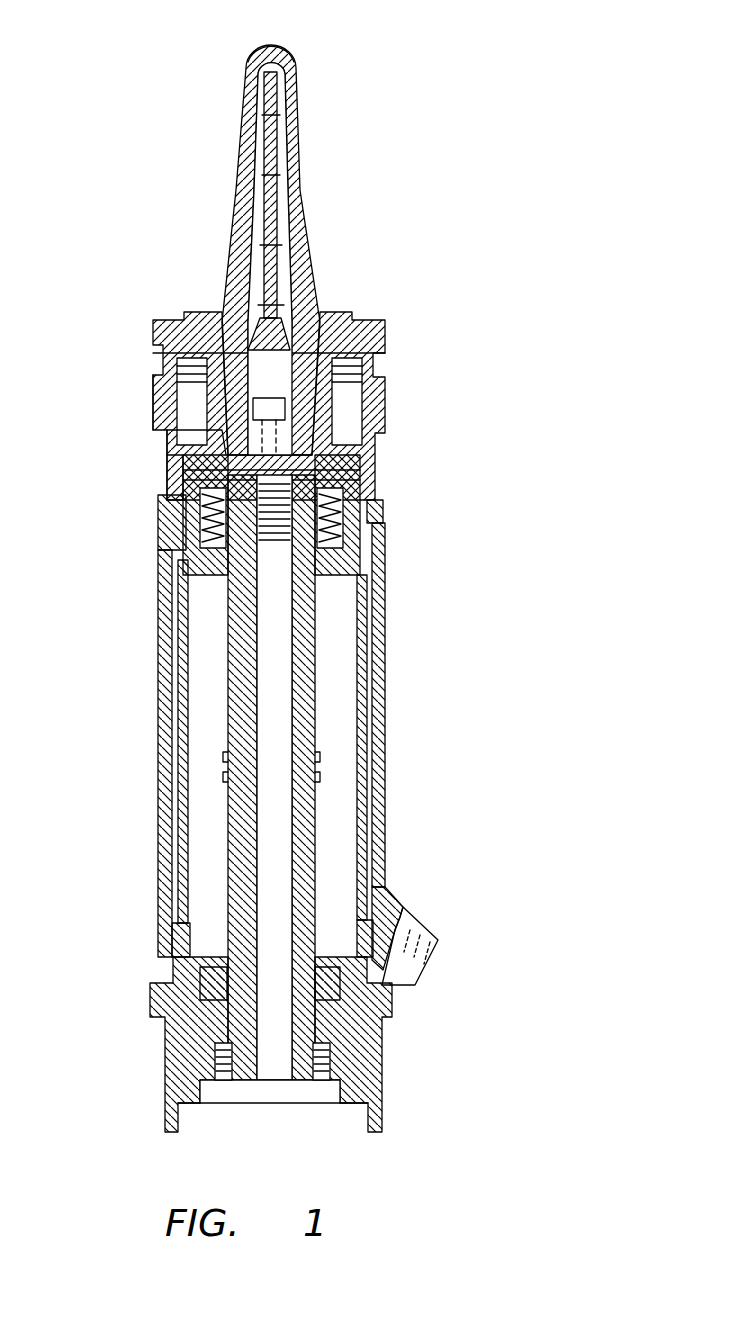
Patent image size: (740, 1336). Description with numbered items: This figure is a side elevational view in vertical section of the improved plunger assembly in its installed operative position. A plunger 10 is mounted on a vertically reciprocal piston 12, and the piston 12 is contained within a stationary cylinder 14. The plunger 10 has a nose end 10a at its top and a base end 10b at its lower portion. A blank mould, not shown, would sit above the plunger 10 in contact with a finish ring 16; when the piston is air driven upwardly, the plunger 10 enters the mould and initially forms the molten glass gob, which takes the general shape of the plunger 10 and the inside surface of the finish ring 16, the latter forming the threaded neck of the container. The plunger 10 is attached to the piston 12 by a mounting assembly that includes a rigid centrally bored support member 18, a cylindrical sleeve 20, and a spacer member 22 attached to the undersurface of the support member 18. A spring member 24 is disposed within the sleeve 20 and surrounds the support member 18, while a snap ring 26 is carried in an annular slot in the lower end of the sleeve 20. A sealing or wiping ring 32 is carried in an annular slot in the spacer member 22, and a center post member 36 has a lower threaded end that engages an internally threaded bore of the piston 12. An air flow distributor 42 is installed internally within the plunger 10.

The plunger 10 is at (303, 187).
The nose end 10a is at (280, 47).
The base end 10b is at (152, 420).
The piston 12 is at (230, 630).
The cylinder 14 is at (355, 688).
The finish ring 16 is at (372, 317).
The support member 18 is at (373, 480).
The cylindrical sleeve 20 is at (160, 480).
The spacer member 22 is at (340, 573).
The spring member 24 is at (347, 520).
The snap ring 26 is at (158, 545).
The sealing or wiping ring 32 is at (383, 572).
The center post member 36 is at (268, 410).
The air flow distributor 42 is at (258, 267).